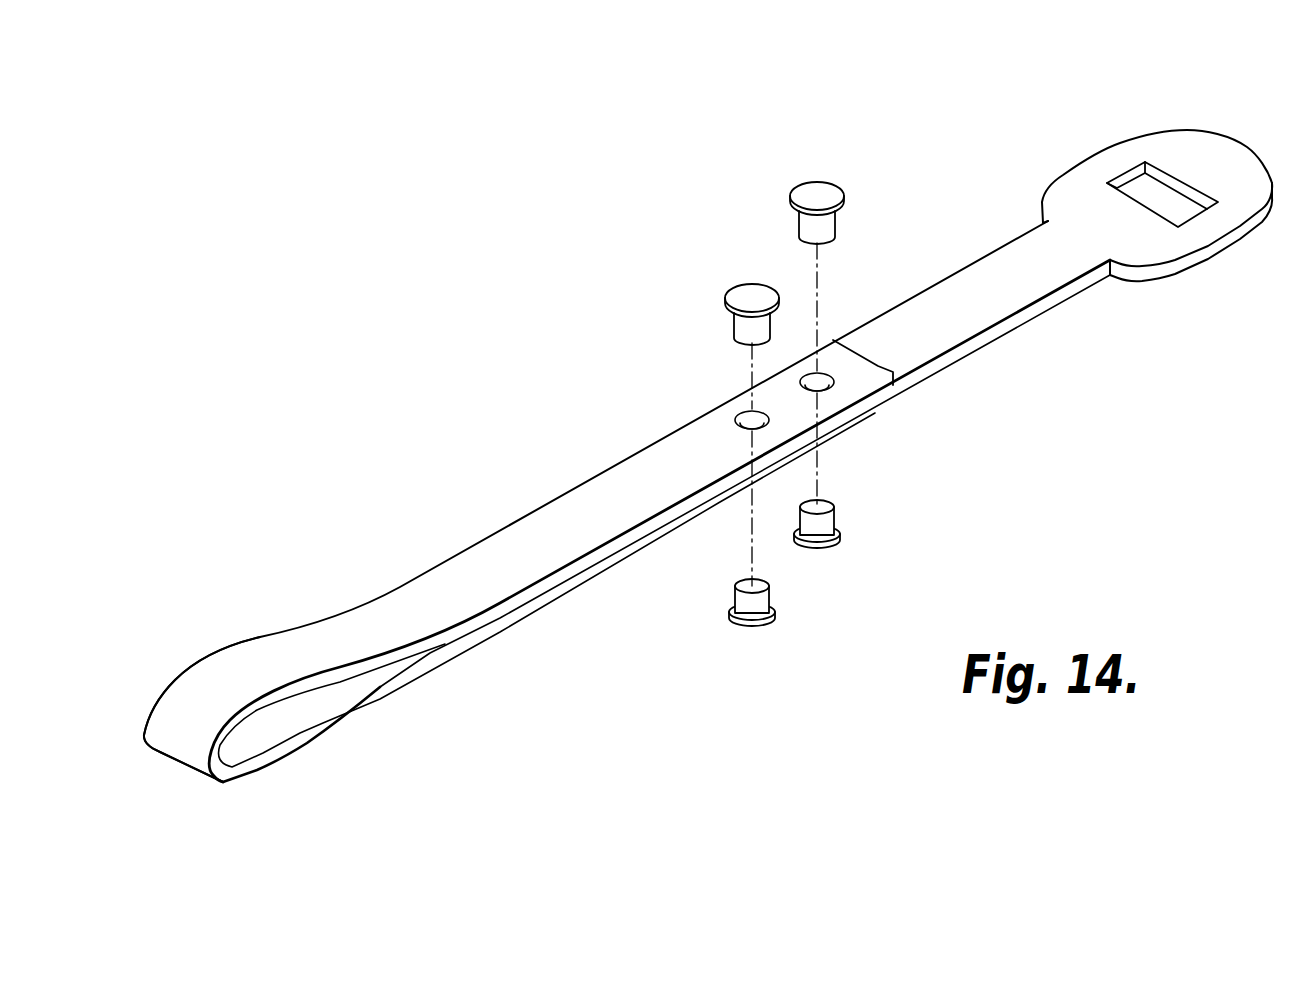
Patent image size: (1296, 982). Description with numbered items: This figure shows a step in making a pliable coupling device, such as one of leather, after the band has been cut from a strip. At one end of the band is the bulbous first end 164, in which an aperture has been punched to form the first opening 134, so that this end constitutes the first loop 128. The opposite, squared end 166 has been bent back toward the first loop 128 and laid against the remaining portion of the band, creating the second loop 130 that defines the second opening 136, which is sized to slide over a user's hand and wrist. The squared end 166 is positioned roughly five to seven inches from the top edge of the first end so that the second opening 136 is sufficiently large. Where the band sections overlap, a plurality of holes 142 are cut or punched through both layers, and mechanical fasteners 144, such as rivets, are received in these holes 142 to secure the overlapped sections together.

The second loop 130 is at (676, 428).
The first loop 128 is at (157, 697).
The first opening 134 is at (252, 735).
The bulbous first end 164 is at (1160, 131).
The second opening 136 is at (1175, 197).
The squared end 166 is at (878, 368).
The holes 142 is at (825, 374).
The mechanical fasteners 144 is at (808, 188).